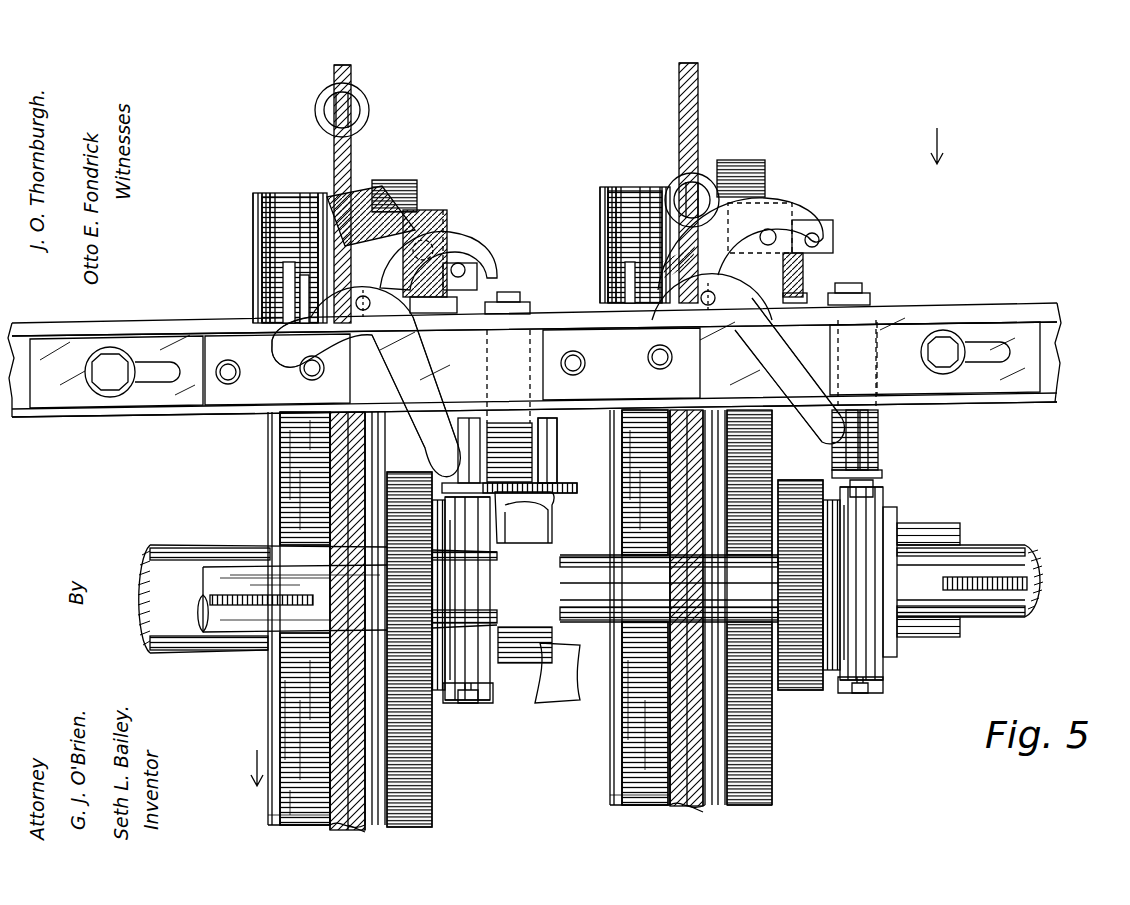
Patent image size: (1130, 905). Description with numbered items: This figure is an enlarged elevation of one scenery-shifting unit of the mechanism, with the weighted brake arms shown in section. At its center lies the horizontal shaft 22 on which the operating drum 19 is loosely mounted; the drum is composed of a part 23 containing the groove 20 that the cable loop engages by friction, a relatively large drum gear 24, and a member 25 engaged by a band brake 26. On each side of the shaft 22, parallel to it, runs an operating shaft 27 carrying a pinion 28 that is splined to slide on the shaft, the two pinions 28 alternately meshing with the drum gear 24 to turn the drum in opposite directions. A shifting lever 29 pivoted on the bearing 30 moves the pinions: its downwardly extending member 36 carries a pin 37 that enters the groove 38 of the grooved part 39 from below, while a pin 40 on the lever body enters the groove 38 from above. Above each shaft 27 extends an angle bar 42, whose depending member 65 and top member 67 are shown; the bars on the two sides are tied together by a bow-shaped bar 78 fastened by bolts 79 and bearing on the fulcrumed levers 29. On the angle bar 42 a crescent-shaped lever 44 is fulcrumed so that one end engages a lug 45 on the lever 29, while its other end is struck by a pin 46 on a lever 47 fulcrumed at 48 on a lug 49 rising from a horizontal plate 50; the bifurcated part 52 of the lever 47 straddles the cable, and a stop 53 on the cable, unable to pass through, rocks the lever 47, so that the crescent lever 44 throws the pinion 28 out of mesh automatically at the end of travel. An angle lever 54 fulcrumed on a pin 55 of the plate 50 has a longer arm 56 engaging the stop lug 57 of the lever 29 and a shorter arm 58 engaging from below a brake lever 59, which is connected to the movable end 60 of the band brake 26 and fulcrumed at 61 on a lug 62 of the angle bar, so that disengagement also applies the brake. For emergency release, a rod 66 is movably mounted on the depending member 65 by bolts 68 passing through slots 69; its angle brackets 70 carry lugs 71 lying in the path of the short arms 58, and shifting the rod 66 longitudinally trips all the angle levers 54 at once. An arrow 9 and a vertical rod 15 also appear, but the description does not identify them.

The direction arrow 9 is at (942, 144).
The screw rod 15 is at (332, 74).
The operating drum 19 is at (503, 618).
The groove 20 is at (365, 822).
The horizontal shaft 22 is at (208, 545).
The drum part 23 is at (330, 440).
The drum gear 24 is at (400, 175).
The brake member 25 is at (265, 280).
The band brake 26 is at (474, 617).
The operating shaft 27 is at (233, 567).
The pinion 28 is at (408, 700).
The shifting lever 29 is at (578, 494).
The bearing 30 is at (922, 660).
The depending member 36 is at (484, 704).
The pin 37 is at (463, 704).
The groove 38 is at (465, 690).
The grooved part 39 is at (497, 680).
The pin 40 is at (500, 565).
The angle bar 42 is at (551, 355).
The crescent-shaped lever 44 is at (458, 297).
The lug 45 is at (496, 420).
The pin 46 is at (477, 268).
The lever 47 is at (440, 212).
The fulcrum 48 is at (458, 262).
The lug 49 is at (460, 232).
The horizontal plate 50 is at (515, 295).
The bifurcated part 52 is at (358, 198).
The stop 53 is at (368, 100).
The angle lever 54 is at (558, 337).
The pin 55 is at (356, 304).
The longer arm 56 is at (606, 373).
The stop lug 57 is at (462, 420).
The shorter arm 58 is at (471, 342).
The brake lever 59 is at (215, 305).
The movable brake end 60 is at (258, 215).
The fulcrum 61 is at (255, 255).
The lug 62 is at (265, 300).
The depending member 65 is at (62, 413).
The rod 66 is at (915, 290).
The top member 67 is at (968, 330).
The bolt 68 is at (110, 390).
The slot 69 is at (160, 385).
The angle bracket 70 is at (228, 395).
The lug 71 is at (458, 364).
The bow-shaped bar 78 is at (552, 435).
The bolt 79 is at (540, 325).